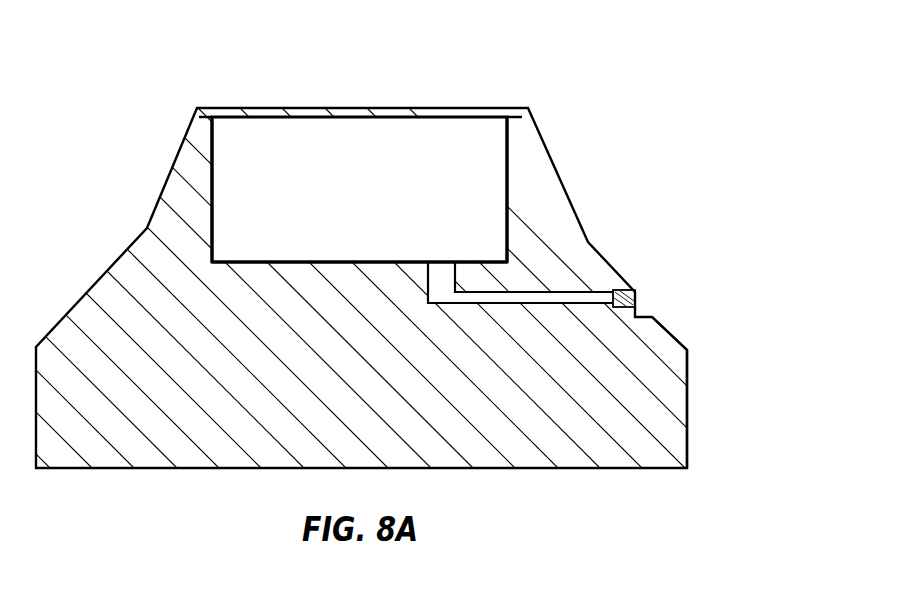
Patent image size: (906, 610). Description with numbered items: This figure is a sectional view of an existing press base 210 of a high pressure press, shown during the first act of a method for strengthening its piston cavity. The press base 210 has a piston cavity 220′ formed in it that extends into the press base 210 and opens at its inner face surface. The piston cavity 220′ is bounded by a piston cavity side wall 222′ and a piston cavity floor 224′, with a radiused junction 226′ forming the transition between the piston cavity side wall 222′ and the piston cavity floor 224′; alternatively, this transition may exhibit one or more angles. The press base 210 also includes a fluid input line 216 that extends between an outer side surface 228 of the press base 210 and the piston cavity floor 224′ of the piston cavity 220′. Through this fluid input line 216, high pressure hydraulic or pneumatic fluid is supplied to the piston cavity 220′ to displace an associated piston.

The press base 210 is at (588, 242).
The fluid input line 216 is at (567, 294).
The piston cavity 220′ is at (415, 181).
The piston cavity side wall 222′ is at (211, 150).
The piston cavity floor 224′ is at (307, 262).
The radiused junction 226′ is at (507, 260).
The outer side surface 228 is at (672, 340).